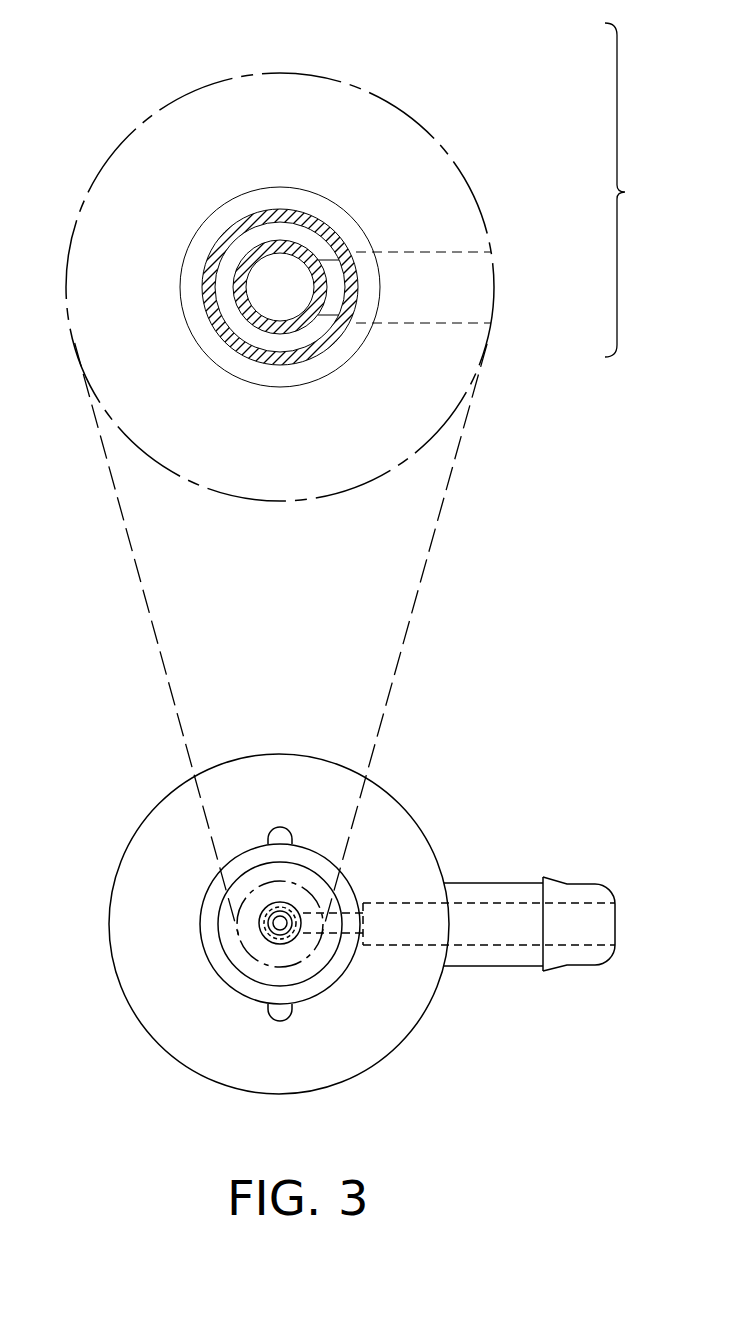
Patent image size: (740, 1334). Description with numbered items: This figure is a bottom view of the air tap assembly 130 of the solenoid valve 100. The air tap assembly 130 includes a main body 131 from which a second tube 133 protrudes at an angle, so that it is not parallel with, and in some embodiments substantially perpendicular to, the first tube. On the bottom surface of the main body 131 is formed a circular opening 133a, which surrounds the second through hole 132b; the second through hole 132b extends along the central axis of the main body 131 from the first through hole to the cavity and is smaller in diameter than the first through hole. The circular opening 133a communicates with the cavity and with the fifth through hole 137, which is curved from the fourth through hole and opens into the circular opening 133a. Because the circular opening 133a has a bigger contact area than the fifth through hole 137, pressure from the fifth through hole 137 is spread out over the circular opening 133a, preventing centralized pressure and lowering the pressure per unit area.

The solenoid valve 100 is at (70, 63).
The air tap assembly 130 is at (644, 190).
The main body 131 is at (329, 118).
The second through hole 132b is at (281, 274).
The second tube 133 is at (480, 291).
The circular opening 133a is at (320, 329).
The fifth through hole 137 is at (338, 288).